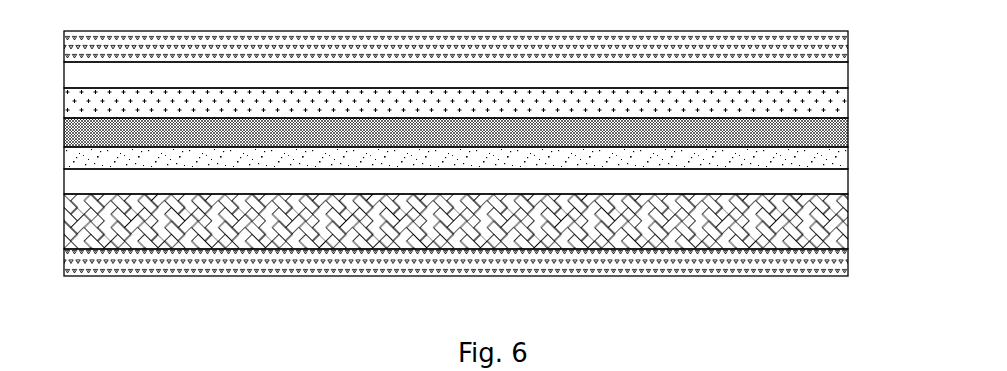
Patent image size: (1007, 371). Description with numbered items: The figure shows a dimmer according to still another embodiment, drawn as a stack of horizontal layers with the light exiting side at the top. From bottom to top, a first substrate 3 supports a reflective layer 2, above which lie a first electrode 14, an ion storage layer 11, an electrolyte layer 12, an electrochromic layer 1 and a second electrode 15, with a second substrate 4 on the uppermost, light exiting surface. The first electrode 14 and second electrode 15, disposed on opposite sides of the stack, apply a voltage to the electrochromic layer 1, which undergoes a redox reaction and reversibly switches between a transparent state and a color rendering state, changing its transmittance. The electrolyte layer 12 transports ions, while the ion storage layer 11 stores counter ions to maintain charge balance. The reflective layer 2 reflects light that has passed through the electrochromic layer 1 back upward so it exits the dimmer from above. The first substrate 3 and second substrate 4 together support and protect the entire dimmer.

The electrochromic layer 1 is at (838, 111).
The ion storage layer 11 is at (838, 163).
The electrolyte layer 12 is at (838, 134).
The first electrode 14 is at (838, 187).
The second electrode 15 is at (838, 78).
The reflective layer 2 is at (838, 228).
The first substrate 3 is at (838, 262).
The second substrate 4 is at (838, 46).